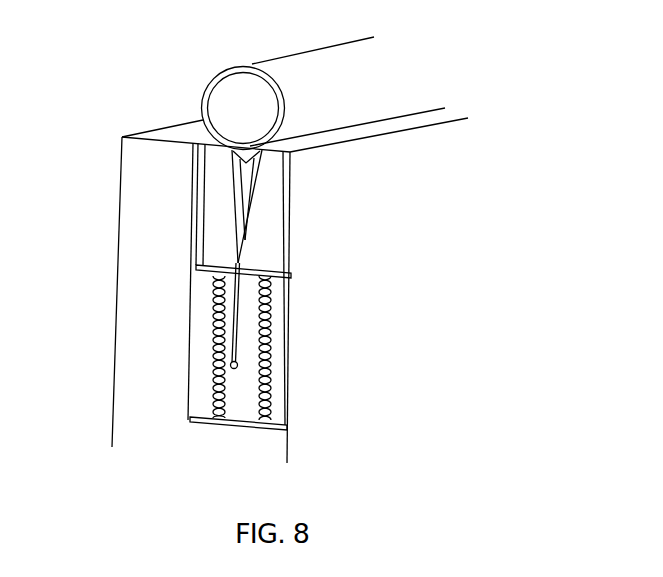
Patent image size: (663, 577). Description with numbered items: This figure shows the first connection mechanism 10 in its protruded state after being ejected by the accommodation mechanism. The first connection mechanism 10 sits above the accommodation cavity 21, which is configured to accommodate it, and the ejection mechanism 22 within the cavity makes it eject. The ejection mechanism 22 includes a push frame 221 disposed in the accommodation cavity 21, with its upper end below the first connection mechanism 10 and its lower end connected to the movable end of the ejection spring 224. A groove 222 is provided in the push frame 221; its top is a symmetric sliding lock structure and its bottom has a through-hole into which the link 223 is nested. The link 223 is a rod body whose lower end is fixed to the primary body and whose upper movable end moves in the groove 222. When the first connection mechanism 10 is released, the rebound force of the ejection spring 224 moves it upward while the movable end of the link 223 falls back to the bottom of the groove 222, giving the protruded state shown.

The first connection mechanism 10 is at (258, 89).
The accommodation cavity 21 is at (182, 255).
The ejection mechanism 22 is at (290, 302).
The push frame 221 is at (302, 259).
The groove 222 is at (302, 167).
The link 223 is at (302, 289).
The ejection spring 224 is at (292, 348).